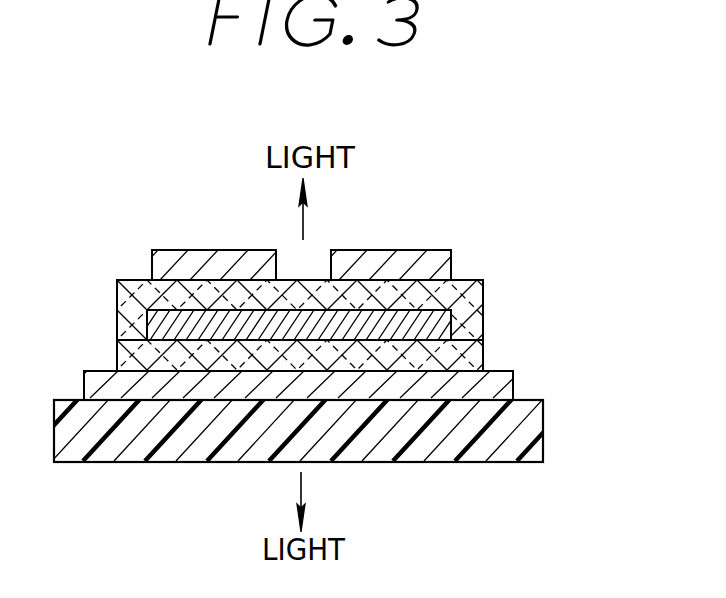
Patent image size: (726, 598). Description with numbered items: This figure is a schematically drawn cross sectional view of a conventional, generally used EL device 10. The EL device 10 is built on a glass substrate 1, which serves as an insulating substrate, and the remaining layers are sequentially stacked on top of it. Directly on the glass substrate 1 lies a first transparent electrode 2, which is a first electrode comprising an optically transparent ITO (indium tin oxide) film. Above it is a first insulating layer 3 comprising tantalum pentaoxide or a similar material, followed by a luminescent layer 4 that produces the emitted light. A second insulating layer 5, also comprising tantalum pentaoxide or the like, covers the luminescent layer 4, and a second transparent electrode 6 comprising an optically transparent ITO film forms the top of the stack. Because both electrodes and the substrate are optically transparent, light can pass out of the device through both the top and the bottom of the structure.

The EL device 10 is at (130, 263).
The glass substrate 1 is at (543, 445).
The first transparent electrode 2 is at (513, 390).
The first insulating layer 3 is at (483, 355).
The luminescent layer 4 is at (483, 325).
The second insulating layer 5 is at (483, 297).
The second transparent electrode 6 is at (451, 251).